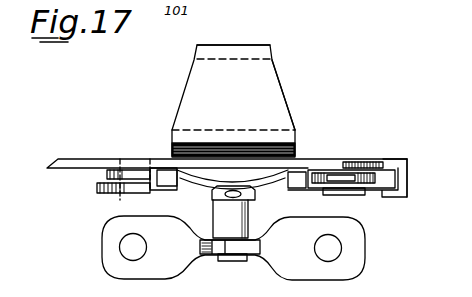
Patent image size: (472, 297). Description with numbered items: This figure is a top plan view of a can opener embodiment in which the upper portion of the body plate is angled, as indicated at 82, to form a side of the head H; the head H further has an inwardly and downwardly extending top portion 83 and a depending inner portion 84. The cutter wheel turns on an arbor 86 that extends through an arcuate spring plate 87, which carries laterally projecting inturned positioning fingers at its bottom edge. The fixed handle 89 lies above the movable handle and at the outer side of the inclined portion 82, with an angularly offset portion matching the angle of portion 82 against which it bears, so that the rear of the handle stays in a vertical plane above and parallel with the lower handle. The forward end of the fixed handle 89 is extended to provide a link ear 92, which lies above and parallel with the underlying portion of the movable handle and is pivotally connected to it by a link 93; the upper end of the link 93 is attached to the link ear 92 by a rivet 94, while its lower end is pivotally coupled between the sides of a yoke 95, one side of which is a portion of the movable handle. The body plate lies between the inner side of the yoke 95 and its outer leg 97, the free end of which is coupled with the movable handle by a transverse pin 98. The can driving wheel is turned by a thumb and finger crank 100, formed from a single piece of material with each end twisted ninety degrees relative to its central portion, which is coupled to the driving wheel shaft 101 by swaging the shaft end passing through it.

The head H is at (285, 87).
The angled upper portion of body plate 82 is at (296, 150).
The top portion of head 83 is at (276, 110).
The depending inner portion of head 84 is at (272, 46).
The arbor 86 is at (255, 202).
The arcuate spring plate 87 is at (190, 178).
The fixed handle 89 is at (90, 157).
The link ear 92 is at (372, 160).
The link 93 is at (378, 184).
The rivet 94 is at (345, 190).
The yoke 95 is at (399, 158).
The outer leg of yoke 97 is at (97, 187).
The transverse pin 98 is at (120, 186).
The thumb and finger crank 100 is at (108, 234).
The driving wheel shaft 101 is at (222, 254).